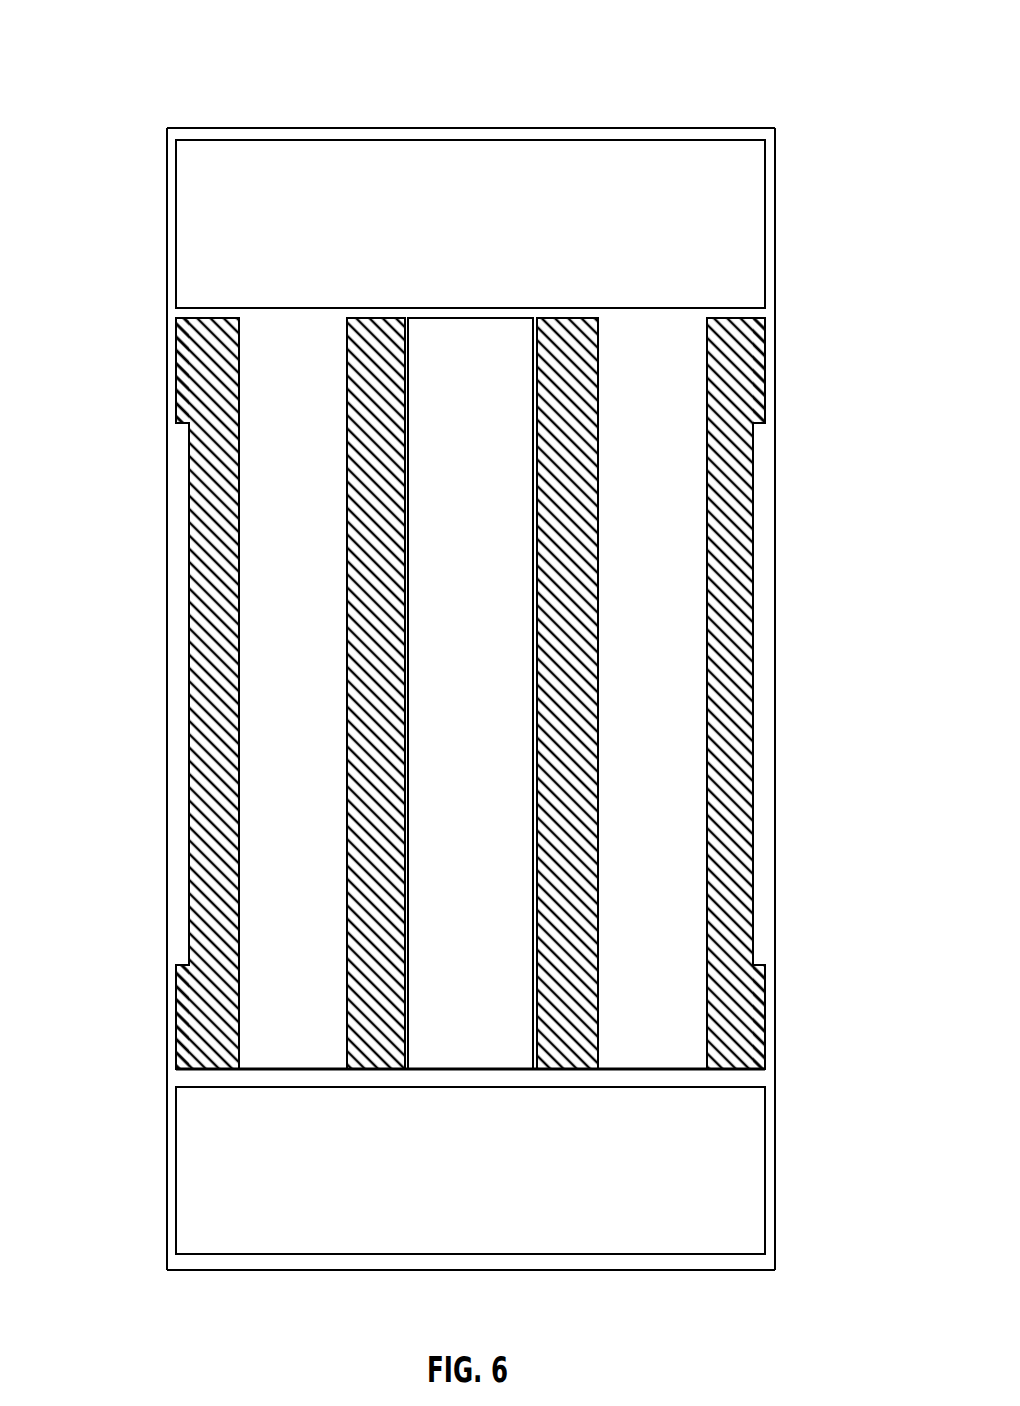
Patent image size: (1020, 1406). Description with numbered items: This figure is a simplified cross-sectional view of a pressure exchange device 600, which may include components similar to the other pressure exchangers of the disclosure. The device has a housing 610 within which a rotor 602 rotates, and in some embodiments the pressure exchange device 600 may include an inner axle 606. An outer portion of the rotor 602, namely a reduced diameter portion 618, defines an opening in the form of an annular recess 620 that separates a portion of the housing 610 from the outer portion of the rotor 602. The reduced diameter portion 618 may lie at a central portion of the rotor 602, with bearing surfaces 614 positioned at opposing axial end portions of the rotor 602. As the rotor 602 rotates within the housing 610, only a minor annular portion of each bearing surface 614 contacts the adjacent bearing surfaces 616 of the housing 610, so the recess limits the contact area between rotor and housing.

The pressure exchange device 600 is at (474, 639).
The housing 610 is at (740, 128).
The inner axle 606 is at (495, 366).
The rotor 602 is at (767, 330).
The bearing surface 614 is at (767, 382).
The bearing surfaces 616 is at (168, 363).
The reduced diameter portion 618 is at (228, 638).
The annular recess 620 is at (178, 735).